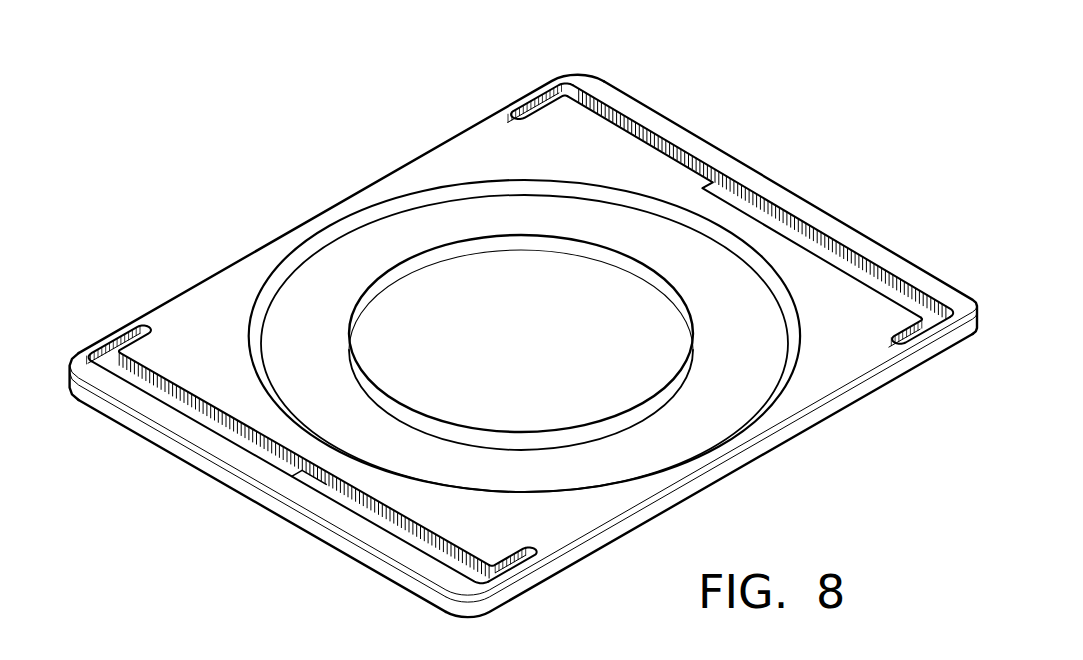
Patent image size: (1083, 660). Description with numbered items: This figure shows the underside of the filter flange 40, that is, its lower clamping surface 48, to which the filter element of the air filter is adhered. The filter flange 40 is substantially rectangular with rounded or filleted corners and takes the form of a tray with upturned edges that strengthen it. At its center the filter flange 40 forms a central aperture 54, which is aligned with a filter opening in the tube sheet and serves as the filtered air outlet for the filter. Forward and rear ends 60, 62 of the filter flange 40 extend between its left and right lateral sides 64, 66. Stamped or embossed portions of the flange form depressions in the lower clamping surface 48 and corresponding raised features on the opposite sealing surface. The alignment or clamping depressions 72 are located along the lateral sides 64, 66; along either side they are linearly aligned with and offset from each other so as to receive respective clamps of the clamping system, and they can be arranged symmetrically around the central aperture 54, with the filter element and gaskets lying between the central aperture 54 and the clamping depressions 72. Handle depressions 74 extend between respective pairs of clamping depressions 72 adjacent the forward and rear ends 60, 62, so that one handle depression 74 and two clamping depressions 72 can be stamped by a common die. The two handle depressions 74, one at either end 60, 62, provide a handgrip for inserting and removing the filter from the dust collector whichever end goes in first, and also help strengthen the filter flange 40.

The filter flange 40 is at (140, 438).
The lower clamping surface 48 is at (190, 300).
The central aperture 54 is at (530, 300).
The forward end 60 is at (292, 520).
The rear end 62 is at (857, 233).
The lateral side 64 is at (852, 392).
The lateral side 66 is at (329, 222).
The clamping depressions 72 is at (522, 110).
The handle depressions 74 is at (752, 215).